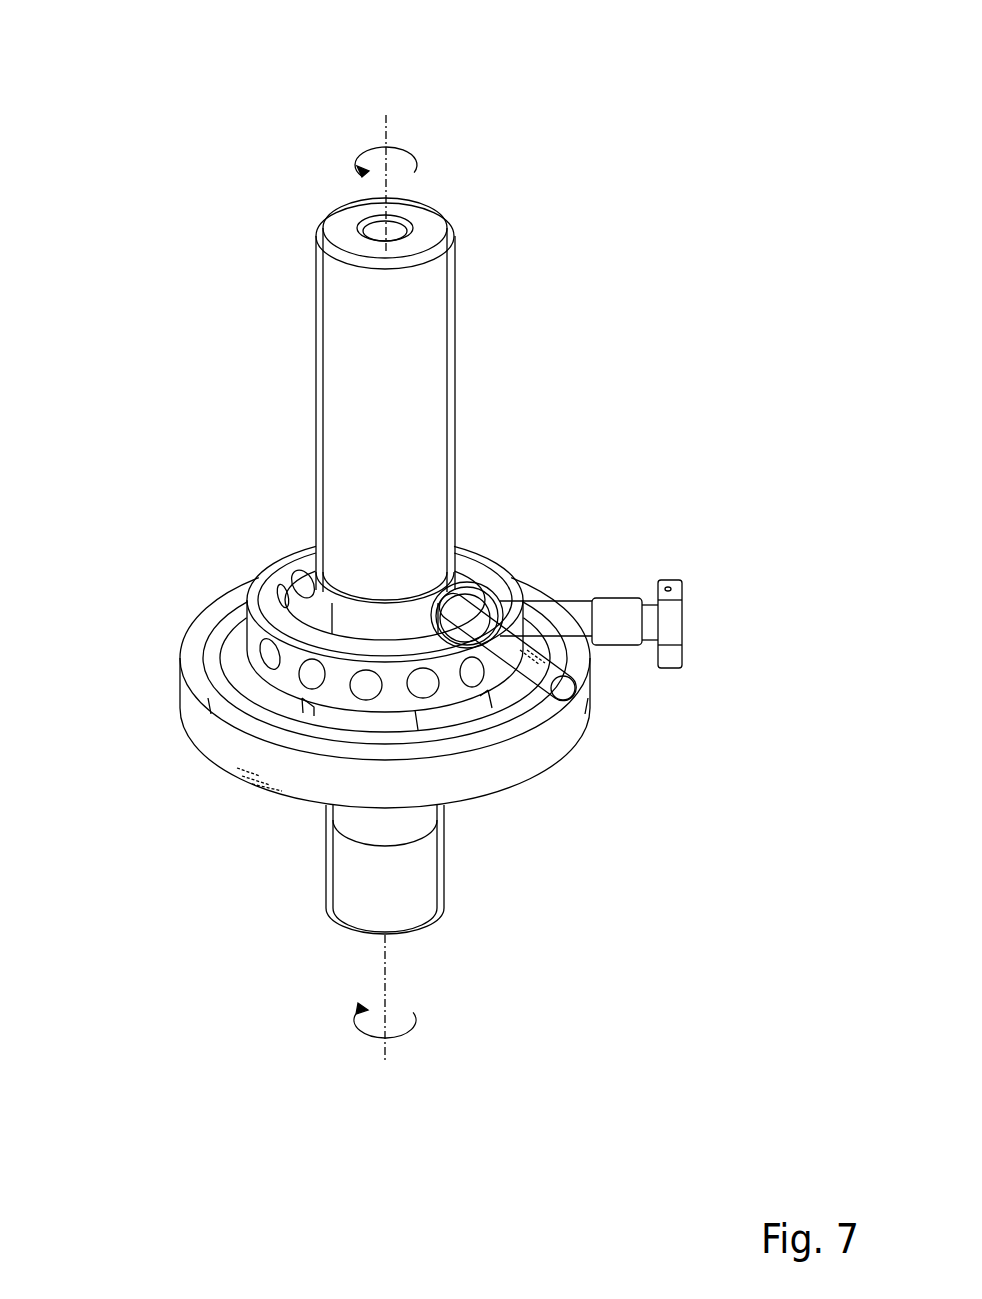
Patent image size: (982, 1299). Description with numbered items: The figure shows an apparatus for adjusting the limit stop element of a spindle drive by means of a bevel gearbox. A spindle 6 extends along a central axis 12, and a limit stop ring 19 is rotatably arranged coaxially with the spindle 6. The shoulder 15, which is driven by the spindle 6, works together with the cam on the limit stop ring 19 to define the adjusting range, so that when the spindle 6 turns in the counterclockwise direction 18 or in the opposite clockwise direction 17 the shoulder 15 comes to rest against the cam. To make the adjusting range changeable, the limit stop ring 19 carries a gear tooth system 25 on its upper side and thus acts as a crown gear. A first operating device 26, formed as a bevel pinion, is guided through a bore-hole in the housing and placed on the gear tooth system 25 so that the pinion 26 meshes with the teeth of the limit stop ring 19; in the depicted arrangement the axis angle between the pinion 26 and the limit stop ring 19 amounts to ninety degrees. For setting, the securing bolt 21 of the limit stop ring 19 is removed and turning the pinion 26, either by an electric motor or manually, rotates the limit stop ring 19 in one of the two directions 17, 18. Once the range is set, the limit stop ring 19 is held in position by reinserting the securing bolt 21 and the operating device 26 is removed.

The spindle 6 is at (412, 362).
The axis 12 is at (390, 125).
The shoulder 15 is at (450, 723).
The clockwise rotation direction 17 is at (380, 1040).
The counterclockwise rotation direction 18 is at (360, 146).
The limit stop ring 19 is at (513, 575).
The securing bolt 21 is at (667, 628).
The gear tooth system 25 is at (335, 640).
The first operating device 26 is at (450, 586).